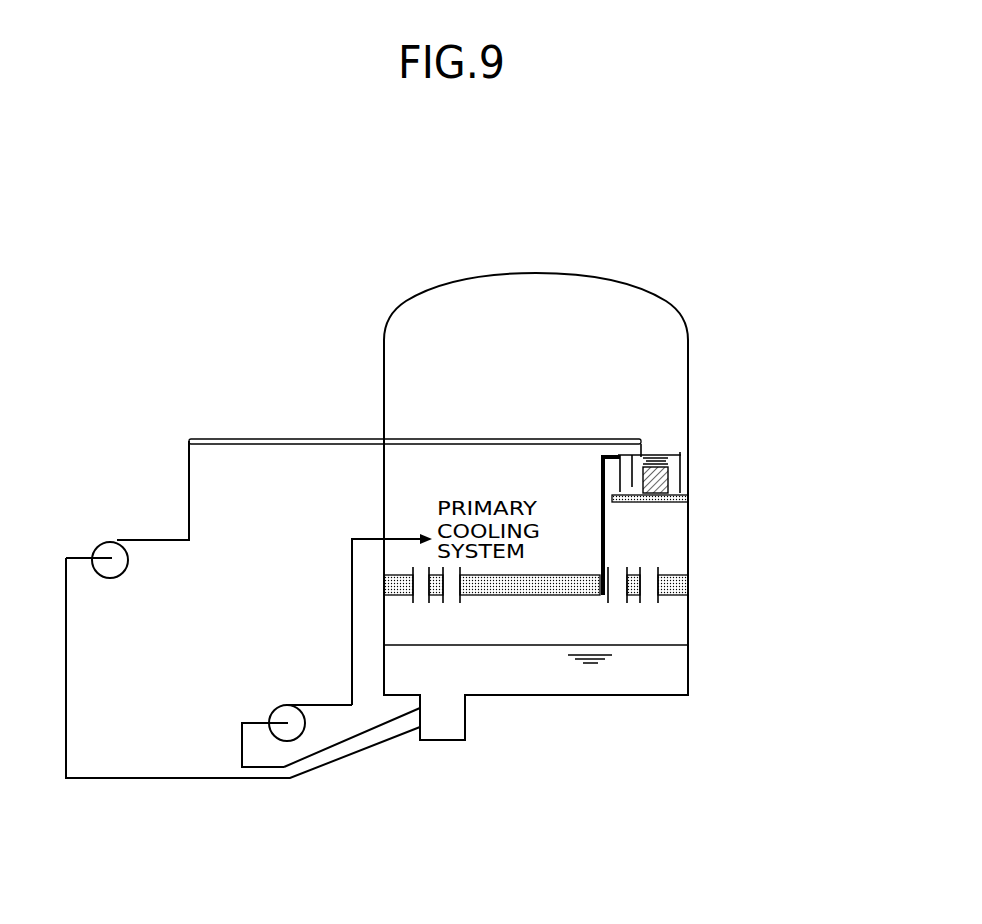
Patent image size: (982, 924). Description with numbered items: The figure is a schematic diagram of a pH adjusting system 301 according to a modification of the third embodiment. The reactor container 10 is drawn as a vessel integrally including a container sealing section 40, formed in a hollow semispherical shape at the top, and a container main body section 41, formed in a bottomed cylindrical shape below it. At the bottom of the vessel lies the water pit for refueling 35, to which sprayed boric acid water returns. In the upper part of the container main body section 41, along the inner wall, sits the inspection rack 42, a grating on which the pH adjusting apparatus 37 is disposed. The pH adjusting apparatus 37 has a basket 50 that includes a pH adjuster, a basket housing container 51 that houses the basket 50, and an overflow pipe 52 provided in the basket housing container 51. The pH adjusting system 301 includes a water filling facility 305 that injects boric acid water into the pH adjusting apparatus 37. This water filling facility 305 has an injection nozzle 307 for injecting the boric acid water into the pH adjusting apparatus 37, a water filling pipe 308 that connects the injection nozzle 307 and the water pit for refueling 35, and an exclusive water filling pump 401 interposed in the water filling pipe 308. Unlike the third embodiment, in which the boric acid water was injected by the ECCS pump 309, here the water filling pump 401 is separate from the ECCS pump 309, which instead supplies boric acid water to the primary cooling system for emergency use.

The reactor container 10 is at (528, 273).
The container sealing section 40 is at (422, 297).
The container main body section 41 is at (384, 386).
The water pit for refueling 35 is at (647, 678).
The pH adjusting system 301 is at (680, 253).
The injection nozzle 307 is at (642, 450).
The pH adjusting apparatus 37 is at (674, 441).
The overflow pipe 52 is at (602, 481).
The basket housing container 51 is at (682, 477).
The basket 50 is at (658, 496).
The inspection rack 42 is at (672, 503).
The water filling facility 305 is at (155, 460).
The water filling pipe 308 is at (189, 499).
The water filling pump 401 is at (118, 564).
The ECCS pump 309 is at (277, 716).